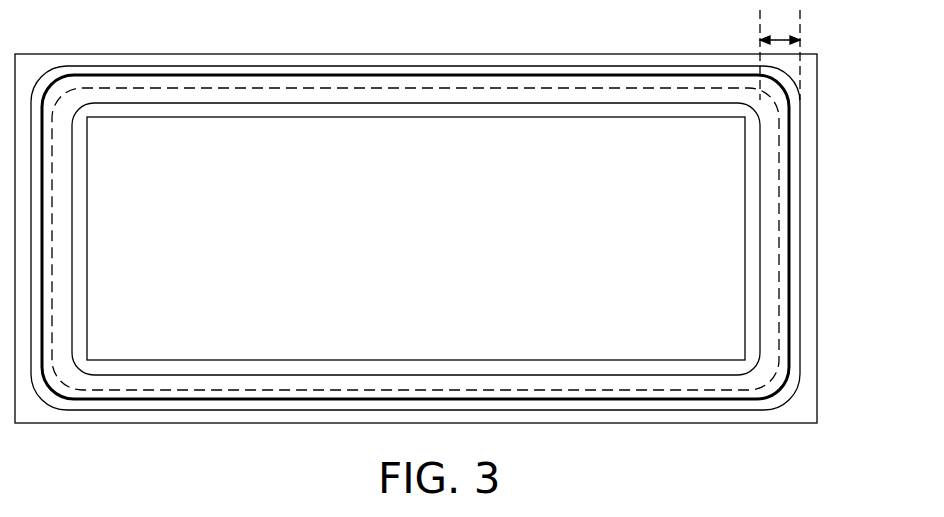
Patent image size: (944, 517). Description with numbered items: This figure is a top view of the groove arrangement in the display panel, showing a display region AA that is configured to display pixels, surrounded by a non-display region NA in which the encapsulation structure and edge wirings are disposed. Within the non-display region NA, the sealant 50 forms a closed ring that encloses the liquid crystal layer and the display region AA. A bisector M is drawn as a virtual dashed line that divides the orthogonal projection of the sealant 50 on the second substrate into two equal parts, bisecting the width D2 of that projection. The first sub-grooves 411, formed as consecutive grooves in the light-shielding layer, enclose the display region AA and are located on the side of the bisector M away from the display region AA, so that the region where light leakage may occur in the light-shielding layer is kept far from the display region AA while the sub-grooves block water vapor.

The display region AA is at (747, 139).
The sealant 50 is at (802, 162).
The first sub-grooves 411 is at (792, 210).
The non-display region NA is at (818, 255).
The bisector M is at (780, 307).
The width of the orthogonal projection of the sealant D2 is at (780, 55).